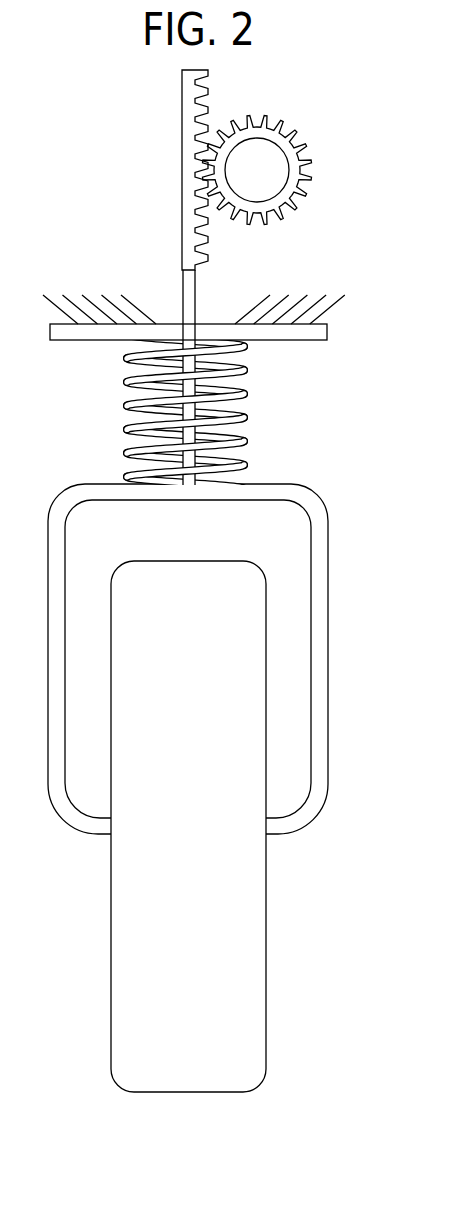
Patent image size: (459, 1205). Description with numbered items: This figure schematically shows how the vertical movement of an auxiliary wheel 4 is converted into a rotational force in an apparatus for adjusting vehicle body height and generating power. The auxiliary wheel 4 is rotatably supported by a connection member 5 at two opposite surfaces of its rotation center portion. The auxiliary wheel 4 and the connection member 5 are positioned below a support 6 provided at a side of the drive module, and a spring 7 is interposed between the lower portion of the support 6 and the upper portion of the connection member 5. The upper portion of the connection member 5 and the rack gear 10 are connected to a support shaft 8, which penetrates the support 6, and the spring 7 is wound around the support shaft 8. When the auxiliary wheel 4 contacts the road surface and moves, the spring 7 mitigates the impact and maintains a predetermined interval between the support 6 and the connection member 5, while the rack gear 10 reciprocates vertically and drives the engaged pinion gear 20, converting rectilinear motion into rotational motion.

The rack gear 10 is at (182, 100).
The pinion gear 20 is at (308, 158).
The support shaft 8 is at (183, 283).
The support 6 is at (327, 331).
The spring 7 is at (247, 415).
The connection member 5 is at (323, 624).
The auxiliary wheel 4 is at (263, 953).